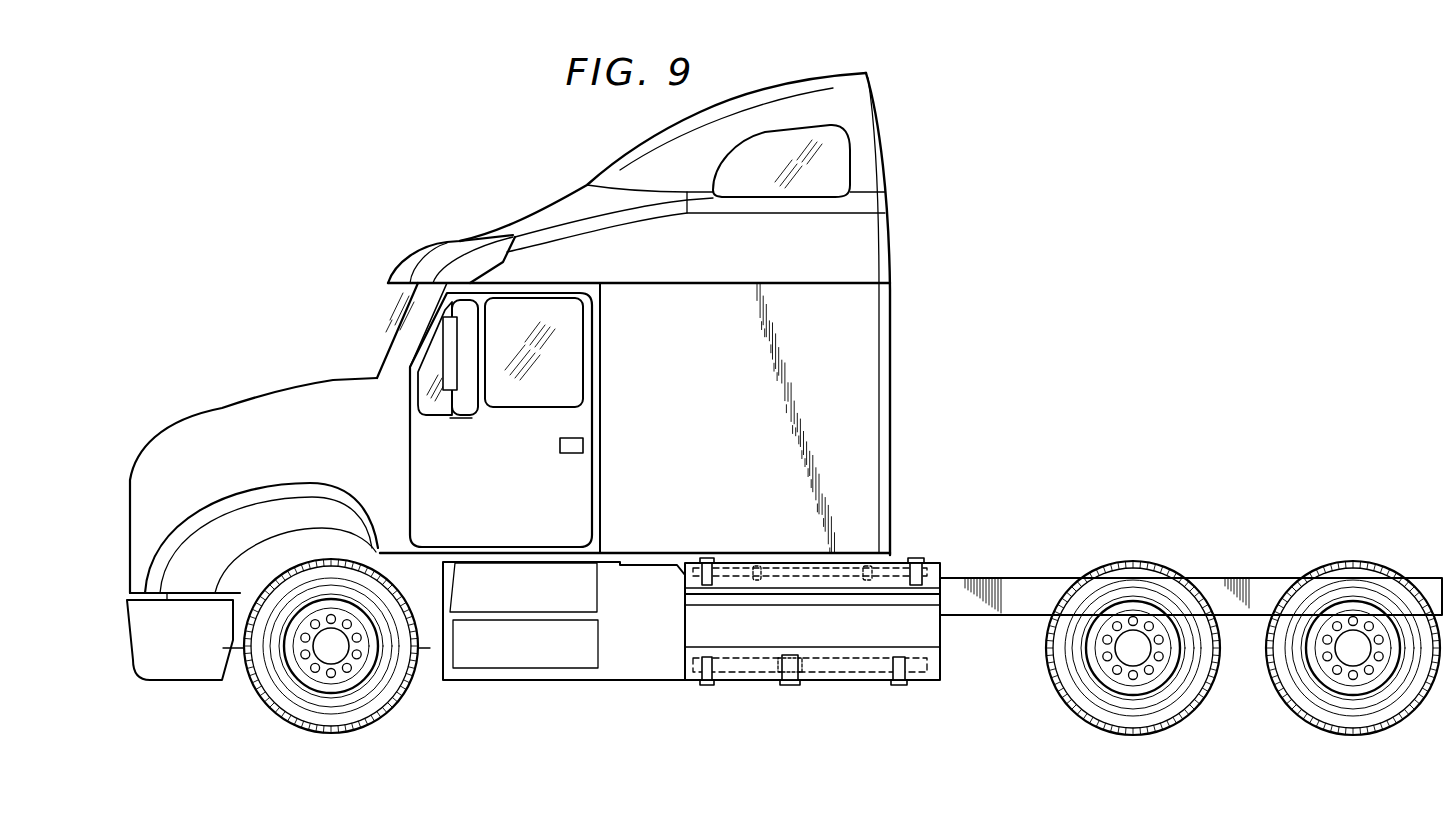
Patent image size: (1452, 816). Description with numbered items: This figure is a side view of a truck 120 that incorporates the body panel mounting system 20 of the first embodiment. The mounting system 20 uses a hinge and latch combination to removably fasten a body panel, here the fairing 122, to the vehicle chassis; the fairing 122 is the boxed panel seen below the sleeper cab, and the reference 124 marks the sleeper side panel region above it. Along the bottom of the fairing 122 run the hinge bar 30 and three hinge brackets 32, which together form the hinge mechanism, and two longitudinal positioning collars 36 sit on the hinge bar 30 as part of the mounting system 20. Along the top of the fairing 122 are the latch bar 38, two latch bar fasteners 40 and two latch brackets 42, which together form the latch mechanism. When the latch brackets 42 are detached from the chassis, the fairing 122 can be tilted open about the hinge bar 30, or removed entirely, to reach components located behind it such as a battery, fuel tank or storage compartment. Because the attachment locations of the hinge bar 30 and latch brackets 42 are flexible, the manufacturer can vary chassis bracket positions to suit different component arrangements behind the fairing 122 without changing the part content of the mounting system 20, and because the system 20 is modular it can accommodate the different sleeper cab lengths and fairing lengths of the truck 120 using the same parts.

The truck 120 is at (517, 186).
The sleeper side panel 124 is at (745, 419).
The fairing 122 is at (812, 621).
The body panel mounting system 20 is at (951, 631).
The latch bar 38 is at (790, 580).
The hinge bar 30 is at (845, 676).
The latch bar fasteners 40 is at (705, 557).
The latch brackets 42 is at (757, 565).
The hinge brackets 32 is at (704, 687).
The longitudinal positioning collars 36 is at (805, 660).